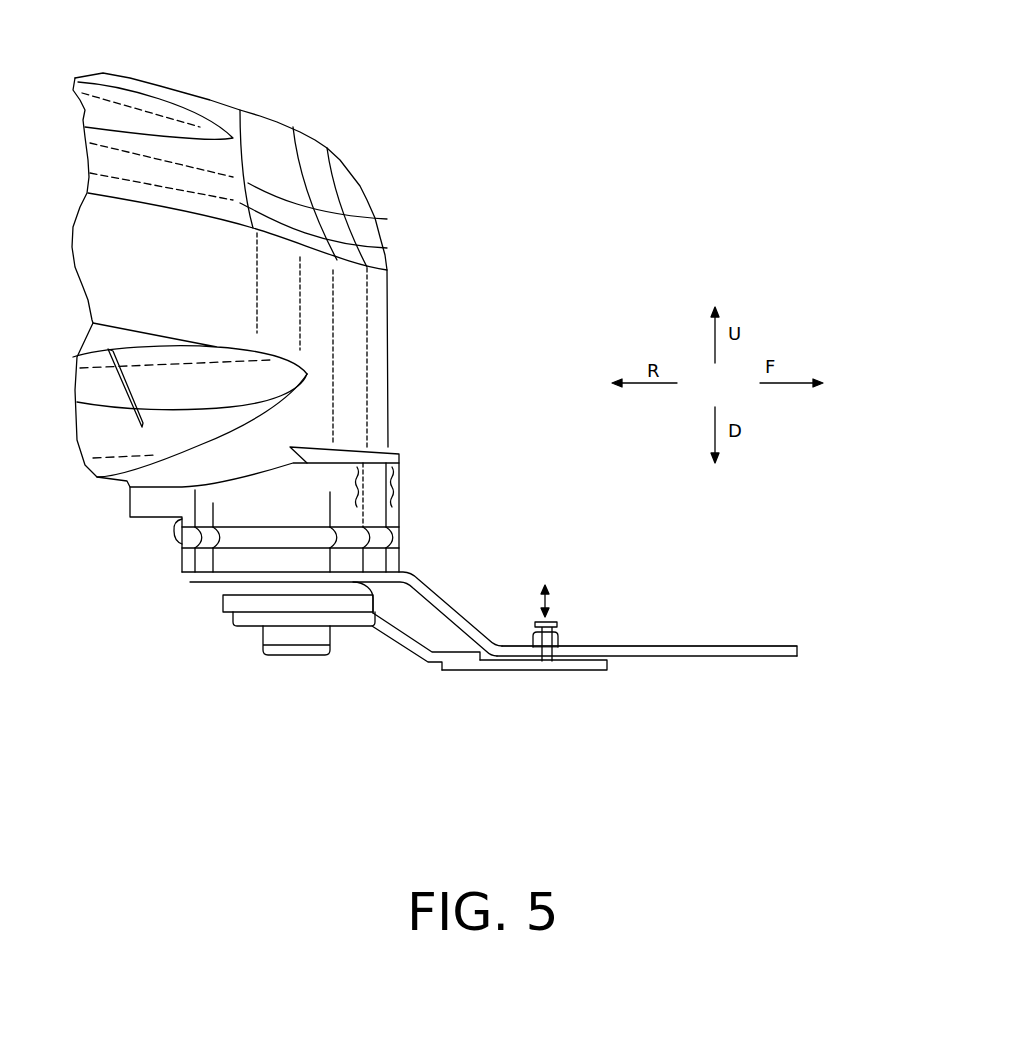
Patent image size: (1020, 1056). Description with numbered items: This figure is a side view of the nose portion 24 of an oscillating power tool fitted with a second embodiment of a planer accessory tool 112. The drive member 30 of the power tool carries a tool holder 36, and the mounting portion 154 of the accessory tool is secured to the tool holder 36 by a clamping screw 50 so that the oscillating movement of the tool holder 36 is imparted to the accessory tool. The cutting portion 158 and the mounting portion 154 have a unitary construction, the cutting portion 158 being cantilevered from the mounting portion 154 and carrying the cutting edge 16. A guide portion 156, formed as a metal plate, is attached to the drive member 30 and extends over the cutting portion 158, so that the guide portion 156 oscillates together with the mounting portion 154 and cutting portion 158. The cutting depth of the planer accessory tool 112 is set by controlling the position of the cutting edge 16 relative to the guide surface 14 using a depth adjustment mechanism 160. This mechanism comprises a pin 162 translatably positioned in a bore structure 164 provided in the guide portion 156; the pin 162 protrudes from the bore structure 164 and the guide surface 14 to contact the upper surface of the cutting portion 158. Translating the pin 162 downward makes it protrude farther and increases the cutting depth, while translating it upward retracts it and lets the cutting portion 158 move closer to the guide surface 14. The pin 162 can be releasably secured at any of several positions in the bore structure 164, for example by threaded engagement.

The nose portion 24 is at (390, 315).
The drive member 30 is at (253, 584).
The tool holder 36 is at (233, 607).
The mounting portion 154 is at (253, 627).
The clamping screw 50 is at (297, 633).
The cutting portion 158 is at (500, 663).
The cutting edge 16 is at (607, 673).
The pin 162 is at (556, 621).
The bore structure 164 is at (533, 637).
The depth adjustment mechanism 160 is at (585, 590).
The planer accessory tool 112 is at (758, 575).
The guide portion 156 is at (783, 647).
The guide surface 14 is at (713, 658).